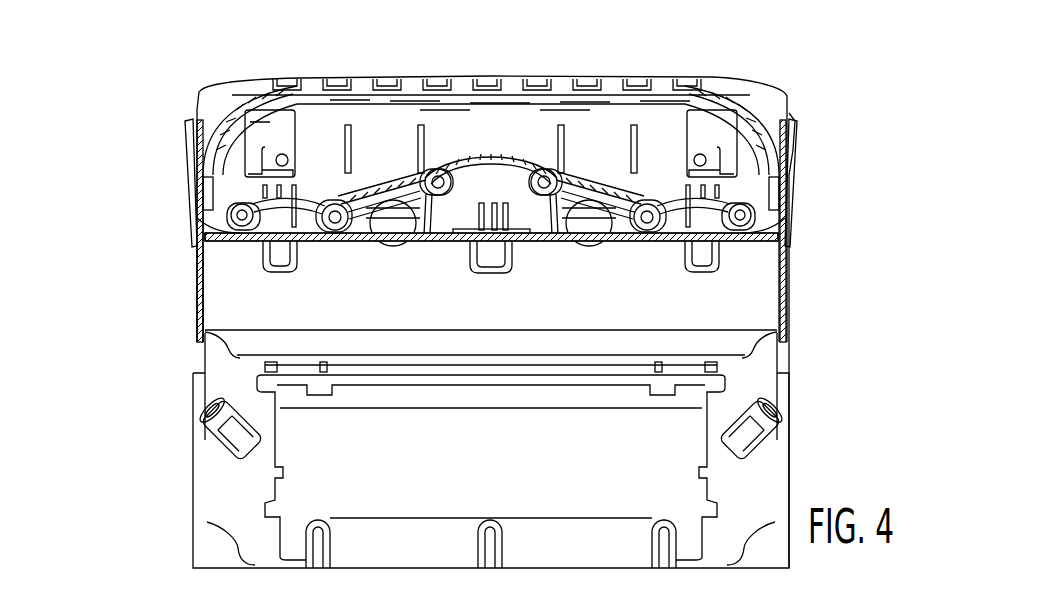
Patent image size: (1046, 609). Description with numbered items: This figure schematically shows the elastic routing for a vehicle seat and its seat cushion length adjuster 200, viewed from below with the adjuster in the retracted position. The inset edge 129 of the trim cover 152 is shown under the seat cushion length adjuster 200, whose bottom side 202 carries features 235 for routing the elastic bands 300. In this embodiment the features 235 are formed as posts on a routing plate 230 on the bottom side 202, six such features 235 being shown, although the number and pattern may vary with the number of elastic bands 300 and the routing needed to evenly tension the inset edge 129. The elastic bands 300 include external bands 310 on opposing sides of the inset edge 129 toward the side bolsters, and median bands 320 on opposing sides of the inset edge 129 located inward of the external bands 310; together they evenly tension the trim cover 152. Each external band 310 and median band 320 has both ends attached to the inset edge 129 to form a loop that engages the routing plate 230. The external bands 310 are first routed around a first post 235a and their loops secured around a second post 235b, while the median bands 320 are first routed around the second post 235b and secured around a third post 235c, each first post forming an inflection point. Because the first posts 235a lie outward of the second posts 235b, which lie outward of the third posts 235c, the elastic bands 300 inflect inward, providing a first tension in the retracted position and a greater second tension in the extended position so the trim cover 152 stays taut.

The seat cushion length adjuster 200 is at (437, 108).
The bottom side 202 is at (288, 140).
The routing plate 230 is at (239, 121).
The features 235 is at (558, 178).
The first post 235a is at (427, 178).
The second post 235b is at (332, 200).
The third post 235c is at (238, 200).
The elastic bands 300 is at (641, 160).
The external bands 310 is at (497, 153).
The median bands 320 is at (397, 158).
The trim cover 152 is at (203, 259).
The inset edge 129 is at (376, 240).